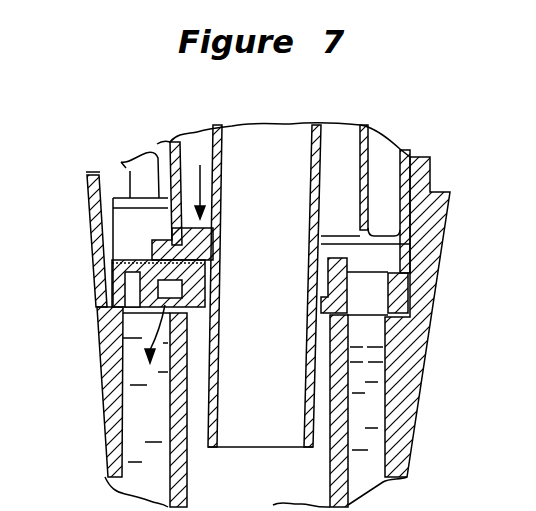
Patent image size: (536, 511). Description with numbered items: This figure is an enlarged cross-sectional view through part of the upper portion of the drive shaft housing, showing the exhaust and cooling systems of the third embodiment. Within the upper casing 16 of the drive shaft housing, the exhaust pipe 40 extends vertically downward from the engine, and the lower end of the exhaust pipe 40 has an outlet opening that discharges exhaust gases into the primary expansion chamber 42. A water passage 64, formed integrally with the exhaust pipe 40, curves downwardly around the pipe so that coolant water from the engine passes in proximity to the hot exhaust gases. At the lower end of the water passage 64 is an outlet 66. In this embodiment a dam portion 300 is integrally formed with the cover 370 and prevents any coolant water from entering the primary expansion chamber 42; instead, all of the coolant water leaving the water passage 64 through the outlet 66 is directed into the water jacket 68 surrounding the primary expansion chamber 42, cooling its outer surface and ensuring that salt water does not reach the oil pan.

The upper casing 16 is at (443, 210).
The exhaust pipe 40 is at (307, 398).
The primary expansion chamber 42 is at (275, 489).
The water passage 64 is at (190, 160).
The outlet 66 is at (150, 253).
The water jacket 68 is at (133, 402).
The dam portion 300 is at (168, 302).
The cover 370 is at (400, 298).